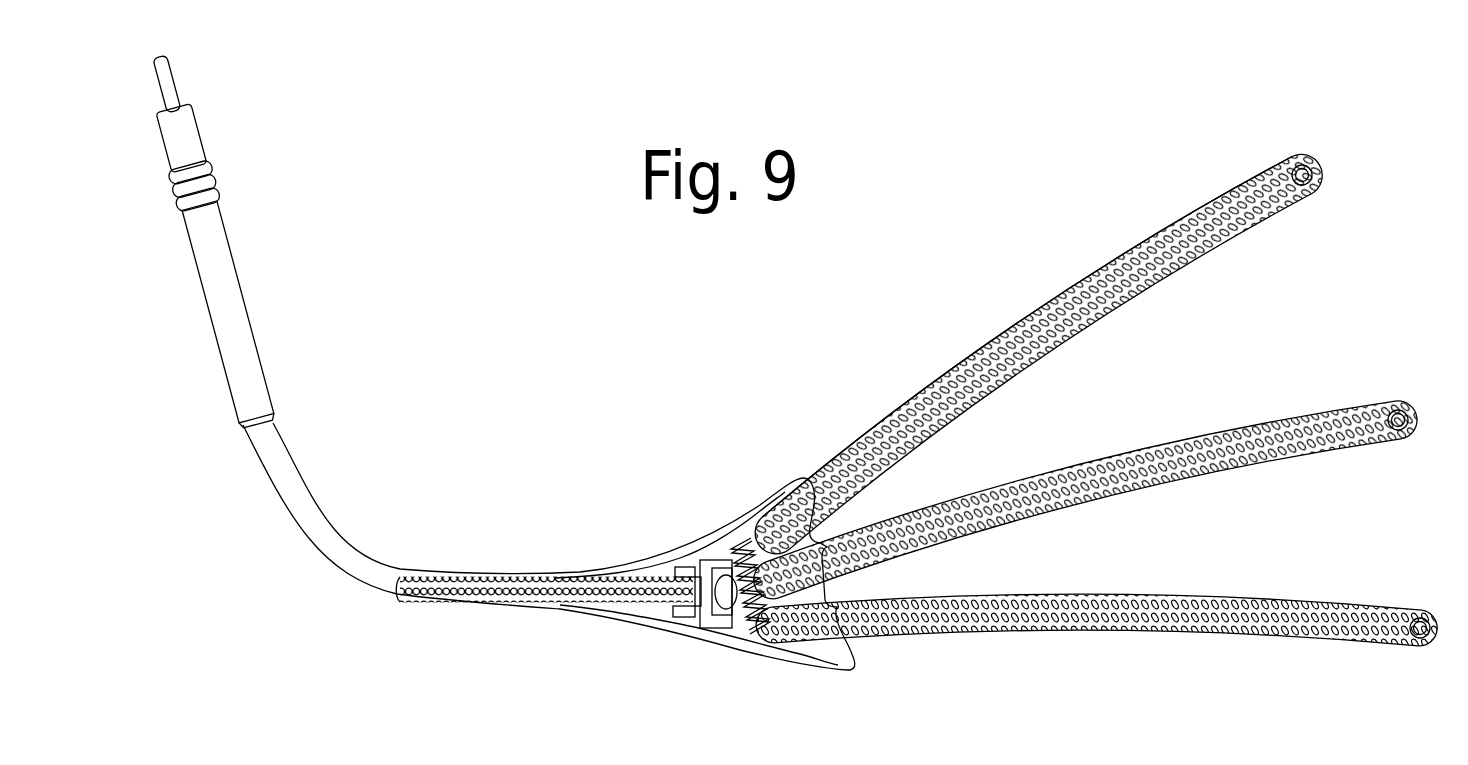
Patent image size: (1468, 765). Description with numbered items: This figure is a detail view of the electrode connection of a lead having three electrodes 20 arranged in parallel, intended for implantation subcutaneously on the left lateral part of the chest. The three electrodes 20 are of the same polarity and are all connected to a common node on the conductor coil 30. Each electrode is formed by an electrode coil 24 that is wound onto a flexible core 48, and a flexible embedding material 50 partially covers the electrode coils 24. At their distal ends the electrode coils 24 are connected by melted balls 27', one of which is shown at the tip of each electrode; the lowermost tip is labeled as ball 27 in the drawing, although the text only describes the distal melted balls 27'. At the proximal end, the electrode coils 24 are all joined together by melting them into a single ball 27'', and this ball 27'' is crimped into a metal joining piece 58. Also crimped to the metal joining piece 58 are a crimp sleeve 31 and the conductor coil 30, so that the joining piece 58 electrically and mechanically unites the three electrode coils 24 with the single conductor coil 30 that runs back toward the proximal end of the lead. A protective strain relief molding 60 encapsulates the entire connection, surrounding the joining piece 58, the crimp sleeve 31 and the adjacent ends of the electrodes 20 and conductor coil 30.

The electrode 20 is at (880, 409).
The electrode coil 24 is at (1037, 318).
The distal tip eyelet of lower tine 27 is at (1439, 674).
The melted ball 27' is at (1375, 344).
The ball 27'' is at (711, 674).
The conductor coil 30 is at (648, 566).
The crimp sleeve 31 is at (684, 566).
The flexible core 48 is at (1190, 247).
The flexible embedding material 50 is at (1237, 192).
The metal joining piece 58 is at (718, 560).
The protective strain relief molding 60 is at (678, 632).